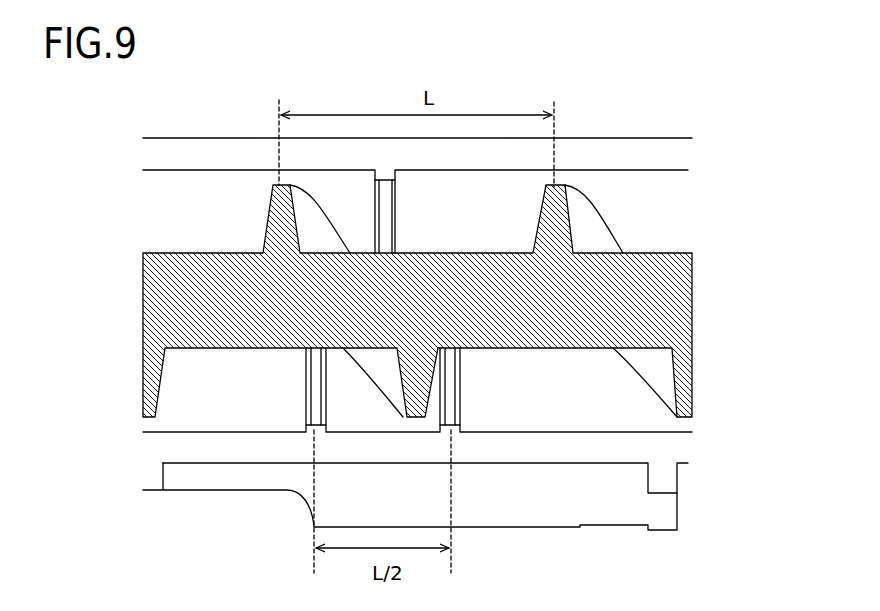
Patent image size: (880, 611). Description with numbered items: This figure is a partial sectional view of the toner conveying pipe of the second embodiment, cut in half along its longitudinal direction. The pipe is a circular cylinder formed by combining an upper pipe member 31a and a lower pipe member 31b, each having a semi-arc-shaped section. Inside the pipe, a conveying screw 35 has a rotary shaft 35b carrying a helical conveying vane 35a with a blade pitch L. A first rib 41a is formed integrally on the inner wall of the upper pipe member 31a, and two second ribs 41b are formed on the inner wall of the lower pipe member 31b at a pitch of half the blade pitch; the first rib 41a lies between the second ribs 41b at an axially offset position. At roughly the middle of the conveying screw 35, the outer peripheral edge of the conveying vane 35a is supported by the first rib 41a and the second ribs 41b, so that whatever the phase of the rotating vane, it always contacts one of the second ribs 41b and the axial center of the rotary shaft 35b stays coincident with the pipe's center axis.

The upper pipe member 31a is at (657, 162).
The lower pipe member 31b is at (213, 450).
The conveying screw 35 is at (478, 301).
The conveying vane 35a is at (588, 220).
The rotary shaft 35b is at (643, 285).
The first rib 41a is at (390, 212).
The second ribs 41b is at (315, 393).